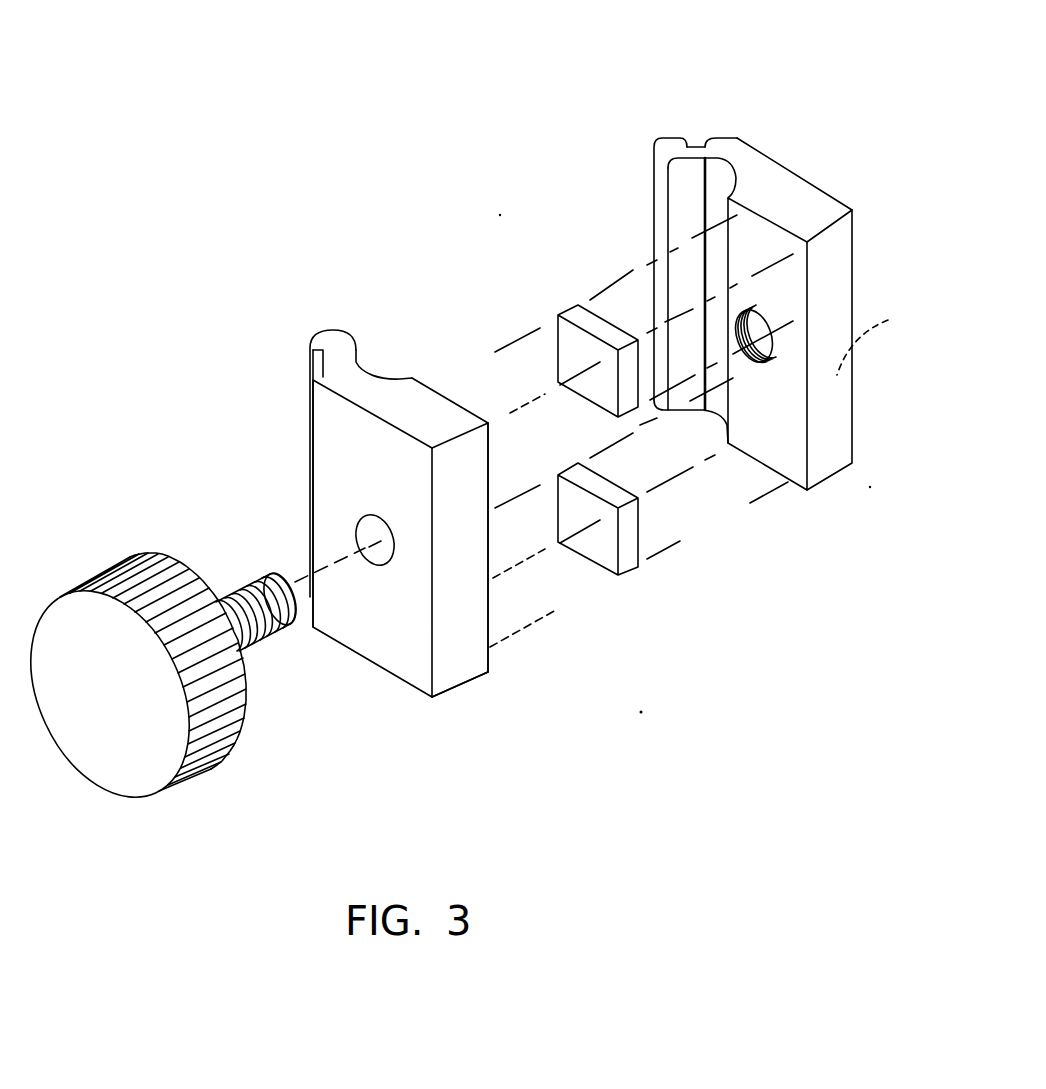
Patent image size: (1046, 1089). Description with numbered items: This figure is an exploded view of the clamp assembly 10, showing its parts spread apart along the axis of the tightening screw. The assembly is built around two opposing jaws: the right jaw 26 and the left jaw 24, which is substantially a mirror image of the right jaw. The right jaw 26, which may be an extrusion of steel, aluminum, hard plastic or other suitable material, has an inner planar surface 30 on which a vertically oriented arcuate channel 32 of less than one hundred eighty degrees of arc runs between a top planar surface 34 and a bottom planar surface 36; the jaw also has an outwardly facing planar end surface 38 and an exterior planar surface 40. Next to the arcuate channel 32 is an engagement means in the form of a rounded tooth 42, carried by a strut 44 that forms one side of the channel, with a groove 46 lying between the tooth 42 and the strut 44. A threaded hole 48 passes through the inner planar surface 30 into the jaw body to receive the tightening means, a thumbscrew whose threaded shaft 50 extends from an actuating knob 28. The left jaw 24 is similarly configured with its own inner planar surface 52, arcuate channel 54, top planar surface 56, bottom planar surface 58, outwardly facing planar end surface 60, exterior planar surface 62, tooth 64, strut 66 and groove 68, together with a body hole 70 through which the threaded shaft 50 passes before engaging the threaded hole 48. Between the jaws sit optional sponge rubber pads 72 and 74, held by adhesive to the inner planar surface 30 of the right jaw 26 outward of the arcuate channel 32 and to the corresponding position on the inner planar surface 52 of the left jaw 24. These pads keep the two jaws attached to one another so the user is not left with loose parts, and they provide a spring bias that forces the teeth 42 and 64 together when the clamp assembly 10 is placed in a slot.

The clamp assembly 10 is at (363, 179).
The left jaw 24 is at (401, 535).
The right jaw 26 is at (786, 302).
The actuating knob 28 is at (110, 755).
The inner planar surface 30 is at (796, 218).
The arcuate channel 32 is at (730, 168).
The top planar surface 34 is at (783, 193).
The bottom planar surface 36 is at (827, 482).
The outwardly facing planar end surface 38 is at (836, 418).
The exterior planar surface 40 is at (878, 340).
The tooth 42 is at (673, 147).
The strut 44 is at (710, 152).
The groove 46 is at (690, 140).
The threaded hole 48 is at (767, 330).
The threaded shaft 50 is at (263, 637).
The inner planar surface 52 is at (490, 623).
The arcuate channel 54 is at (390, 377).
The top planar surface 56 is at (412, 407).
The bottom planar surface 58 is at (467, 687).
The outwardly facing planar end surface 60 is at (450, 647).
The exterior planar surface 62 is at (398, 655).
The tooth 64 is at (327, 340).
The strut 66 is at (338, 358).
The groove 68 is at (323, 357).
The body hole 70 is at (365, 540).
The sponge rubber pad 72 is at (570, 342).
The sponge rubber pad 74 is at (604, 548).